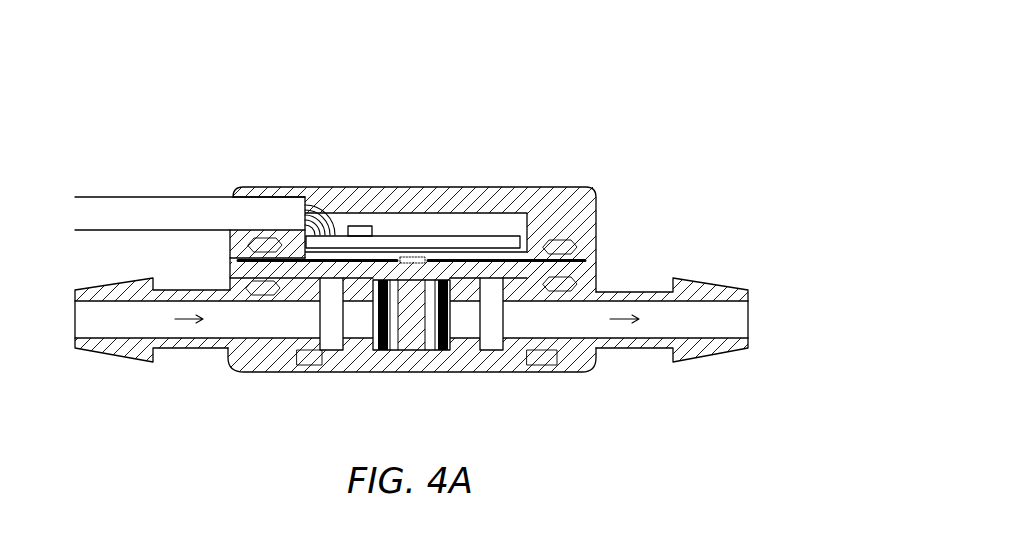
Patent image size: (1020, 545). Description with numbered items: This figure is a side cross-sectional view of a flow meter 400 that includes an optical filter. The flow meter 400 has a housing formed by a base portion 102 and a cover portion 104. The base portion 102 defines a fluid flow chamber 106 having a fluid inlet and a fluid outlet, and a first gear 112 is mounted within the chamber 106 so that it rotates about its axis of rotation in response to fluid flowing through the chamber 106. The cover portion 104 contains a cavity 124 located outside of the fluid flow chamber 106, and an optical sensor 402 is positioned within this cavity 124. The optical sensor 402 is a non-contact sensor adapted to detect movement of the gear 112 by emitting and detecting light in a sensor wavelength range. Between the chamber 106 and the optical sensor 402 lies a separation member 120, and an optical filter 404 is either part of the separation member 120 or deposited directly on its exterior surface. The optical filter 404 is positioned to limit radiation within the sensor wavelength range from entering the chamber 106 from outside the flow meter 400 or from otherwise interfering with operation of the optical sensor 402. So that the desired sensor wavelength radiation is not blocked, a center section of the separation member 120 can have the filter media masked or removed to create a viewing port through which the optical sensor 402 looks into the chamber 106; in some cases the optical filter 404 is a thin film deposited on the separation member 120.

The flow meter 400 is at (445, 88).
The optical sensor 402 is at (412, 255).
The cavity 124 is at (504, 222).
The cover portion 104 is at (597, 214).
The separation member 120 is at (565, 268).
The optical filter 404 is at (286, 262).
The fluid flow chamber 106 is at (325, 350).
The first gear 112 is at (382, 350).
The base portion 102 is at (506, 372).